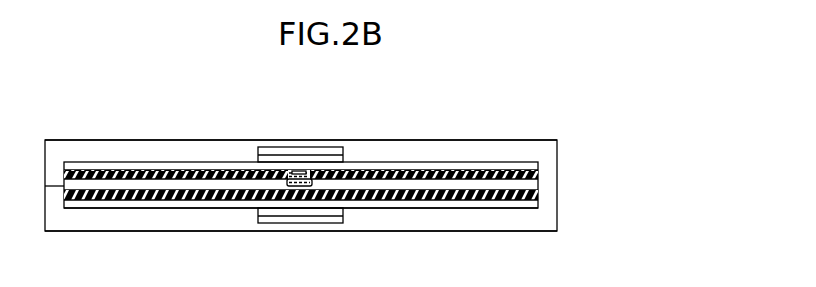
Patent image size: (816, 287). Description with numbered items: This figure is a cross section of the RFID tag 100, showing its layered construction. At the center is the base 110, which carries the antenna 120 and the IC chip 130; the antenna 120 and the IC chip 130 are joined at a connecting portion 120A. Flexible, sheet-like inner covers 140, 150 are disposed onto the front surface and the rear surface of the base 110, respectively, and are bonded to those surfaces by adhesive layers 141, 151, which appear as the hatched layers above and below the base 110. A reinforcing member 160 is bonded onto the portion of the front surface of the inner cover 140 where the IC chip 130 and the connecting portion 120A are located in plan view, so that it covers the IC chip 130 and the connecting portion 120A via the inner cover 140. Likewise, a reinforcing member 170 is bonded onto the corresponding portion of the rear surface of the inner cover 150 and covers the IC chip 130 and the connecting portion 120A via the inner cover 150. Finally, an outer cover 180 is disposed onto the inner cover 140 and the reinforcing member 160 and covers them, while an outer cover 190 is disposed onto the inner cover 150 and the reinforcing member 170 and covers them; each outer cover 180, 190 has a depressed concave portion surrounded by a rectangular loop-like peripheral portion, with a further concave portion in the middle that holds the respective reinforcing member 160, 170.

The RFID tag 100 is at (633, 92).
The base 110 is at (533, 182).
The antenna 120 is at (450, 162).
The connecting portion 120A is at (295, 188).
The IC chip 130 is at (302, 171).
The inner cover 140 is at (535, 163).
The adhesive layer 141 is at (535, 173).
The inner cover 150 is at (535, 203).
The adhesive layer 151 is at (535, 192).
The reinforcing member 160 is at (330, 147).
The reinforcing member 170 is at (330, 222).
The outer cover 180 is at (517, 148).
The outer cover 190 is at (517, 218).